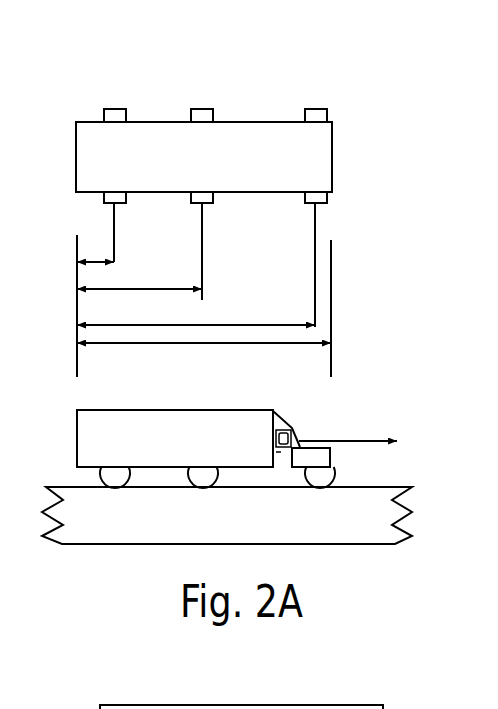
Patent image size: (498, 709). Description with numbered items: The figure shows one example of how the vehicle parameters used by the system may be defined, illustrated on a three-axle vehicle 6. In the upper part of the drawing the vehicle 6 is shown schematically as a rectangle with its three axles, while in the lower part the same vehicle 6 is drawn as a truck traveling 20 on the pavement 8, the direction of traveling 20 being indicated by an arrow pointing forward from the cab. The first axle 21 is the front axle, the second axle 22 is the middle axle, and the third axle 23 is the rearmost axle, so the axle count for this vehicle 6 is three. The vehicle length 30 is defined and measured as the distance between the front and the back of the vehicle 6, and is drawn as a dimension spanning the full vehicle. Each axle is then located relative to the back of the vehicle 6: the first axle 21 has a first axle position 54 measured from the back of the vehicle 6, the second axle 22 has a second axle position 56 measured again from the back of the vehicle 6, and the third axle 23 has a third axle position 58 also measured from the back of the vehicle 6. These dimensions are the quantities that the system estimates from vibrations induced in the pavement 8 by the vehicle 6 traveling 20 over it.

The vehicle 6 is at (204, 305).
The pavement 8 is at (297, 524).
The traveling 20 is at (370, 438).
The first axle 21 is at (306, 111).
The second axle 22 is at (197, 110).
The third axle 23 is at (104, 111).
The vehicle length 30 is at (133, 345).
The first axle position 54 is at (233, 324).
The second axle position 56 is at (103, 292).
The third axle position 58 is at (95, 265).